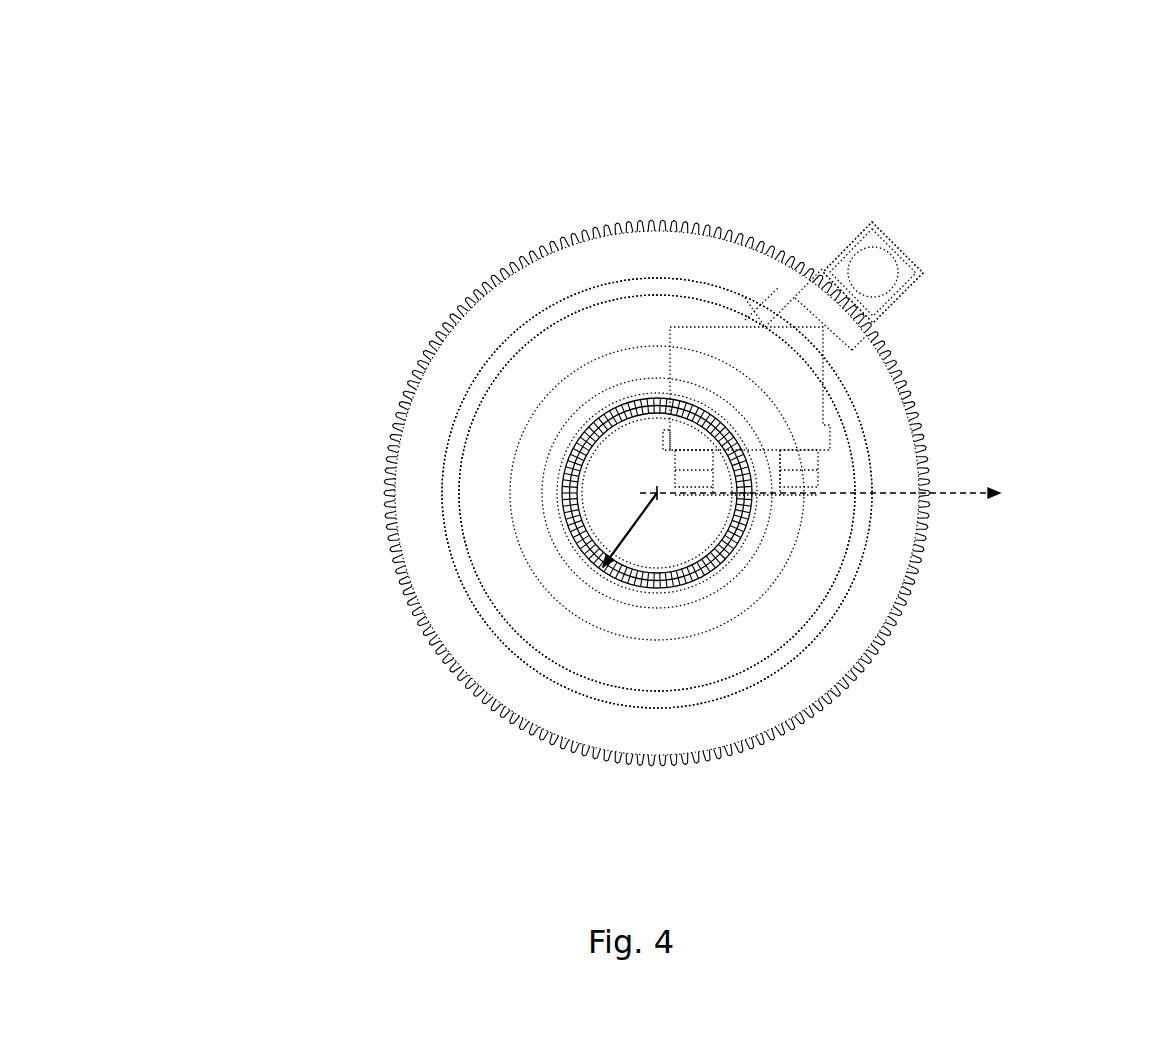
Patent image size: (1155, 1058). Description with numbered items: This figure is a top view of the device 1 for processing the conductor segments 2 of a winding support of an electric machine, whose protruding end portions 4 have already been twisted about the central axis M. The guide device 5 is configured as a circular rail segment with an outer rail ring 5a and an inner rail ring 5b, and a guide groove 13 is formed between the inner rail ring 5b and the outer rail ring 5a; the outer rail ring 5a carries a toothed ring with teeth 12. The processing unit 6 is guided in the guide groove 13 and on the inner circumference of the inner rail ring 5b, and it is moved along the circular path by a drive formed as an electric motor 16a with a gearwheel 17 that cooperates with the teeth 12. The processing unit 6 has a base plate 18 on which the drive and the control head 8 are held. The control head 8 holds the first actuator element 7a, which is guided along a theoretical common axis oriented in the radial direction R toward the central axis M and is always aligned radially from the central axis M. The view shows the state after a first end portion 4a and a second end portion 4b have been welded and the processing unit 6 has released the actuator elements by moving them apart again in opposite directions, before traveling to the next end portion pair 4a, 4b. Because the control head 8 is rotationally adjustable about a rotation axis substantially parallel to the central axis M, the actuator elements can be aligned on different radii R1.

The device 1 is at (958, 170).
The conductor segments 2 is at (563, 477).
The end portions 4 is at (697, 495).
The first end portion 4a is at (757, 495).
The second end portion 4b is at (740, 495).
The guide device 5 is at (518, 382).
The outer rail ring 5a is at (480, 510).
The inner rail ring 5b is at (452, 605).
The processing unit 6 is at (842, 313).
The first actuator element 7a is at (793, 495).
The control head 8 is at (763, 378).
The teeth 12 is at (640, 222).
The guide groove 13 is at (858, 442).
The electric motor 16a is at (878, 275).
The gearwheel 17 is at (908, 298).
The base plate 18 is at (825, 297).
The central axis M is at (645, 483).
The radial direction R is at (832, 493).
The radii R1 is at (626, 530).